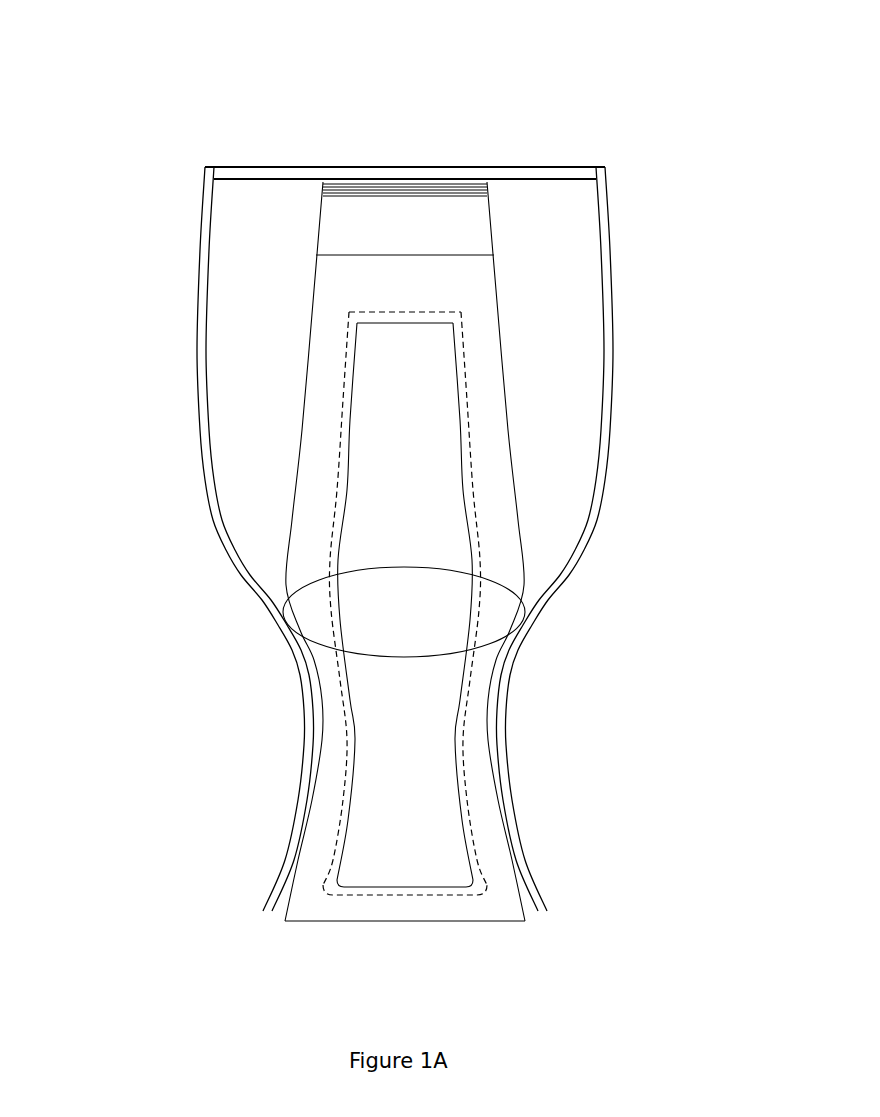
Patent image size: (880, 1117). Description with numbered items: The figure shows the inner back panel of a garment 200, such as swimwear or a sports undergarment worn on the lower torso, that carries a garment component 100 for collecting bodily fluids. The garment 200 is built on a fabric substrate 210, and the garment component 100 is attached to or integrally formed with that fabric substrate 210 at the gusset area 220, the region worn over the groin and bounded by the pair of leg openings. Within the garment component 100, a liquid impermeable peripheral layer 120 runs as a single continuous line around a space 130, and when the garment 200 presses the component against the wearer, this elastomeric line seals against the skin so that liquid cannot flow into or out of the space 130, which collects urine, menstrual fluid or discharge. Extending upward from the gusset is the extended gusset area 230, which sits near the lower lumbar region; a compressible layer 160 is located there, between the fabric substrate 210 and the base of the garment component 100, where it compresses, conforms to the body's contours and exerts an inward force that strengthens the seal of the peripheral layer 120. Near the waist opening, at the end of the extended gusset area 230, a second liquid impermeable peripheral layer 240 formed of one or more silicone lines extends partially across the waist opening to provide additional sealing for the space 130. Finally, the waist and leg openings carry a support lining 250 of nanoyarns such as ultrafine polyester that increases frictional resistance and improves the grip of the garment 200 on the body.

The garment component 100 is at (404, 622).
The liquid impermeable peripheral layer 120 is at (350, 690).
The space 130 is at (415, 510).
The compressible layer 160 is at (463, 227).
The garment 200 is at (160, 119).
The fabric substrate 210 is at (248, 260).
The gusset area 220 is at (307, 587).
The extended gusset area 230 is at (493, 442).
The second liquid impermeable peripheral layer 240 is at (473, 182).
The support lining 250 is at (250, 174).